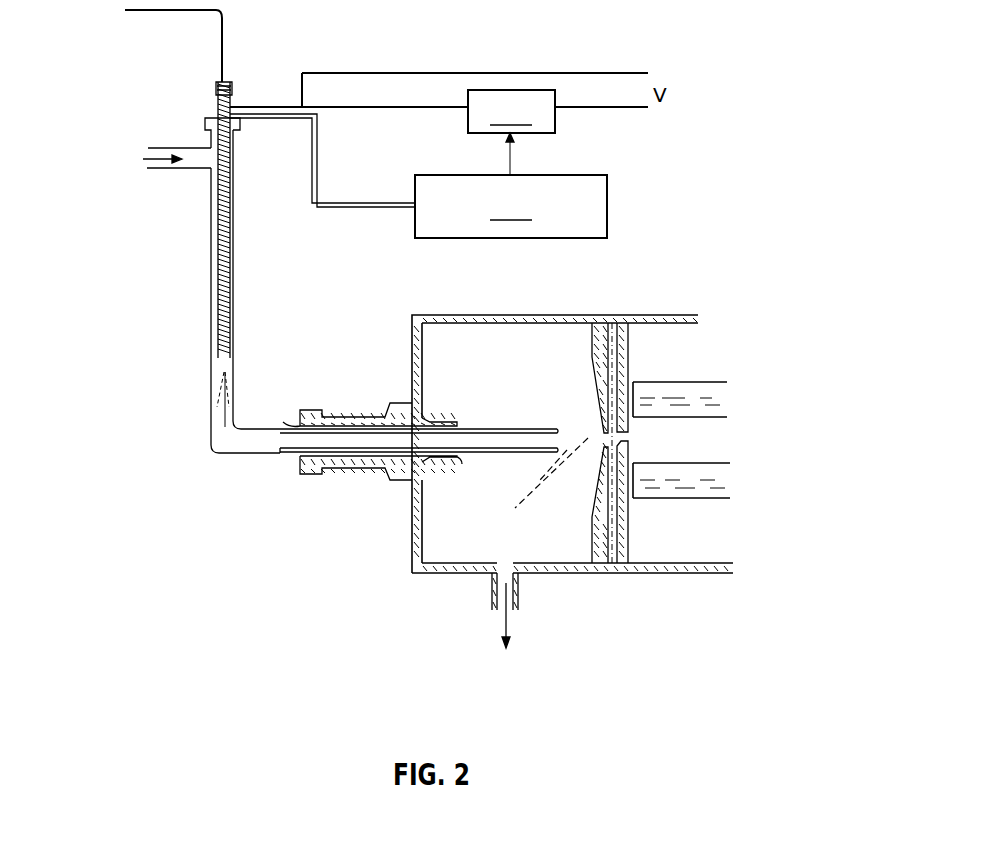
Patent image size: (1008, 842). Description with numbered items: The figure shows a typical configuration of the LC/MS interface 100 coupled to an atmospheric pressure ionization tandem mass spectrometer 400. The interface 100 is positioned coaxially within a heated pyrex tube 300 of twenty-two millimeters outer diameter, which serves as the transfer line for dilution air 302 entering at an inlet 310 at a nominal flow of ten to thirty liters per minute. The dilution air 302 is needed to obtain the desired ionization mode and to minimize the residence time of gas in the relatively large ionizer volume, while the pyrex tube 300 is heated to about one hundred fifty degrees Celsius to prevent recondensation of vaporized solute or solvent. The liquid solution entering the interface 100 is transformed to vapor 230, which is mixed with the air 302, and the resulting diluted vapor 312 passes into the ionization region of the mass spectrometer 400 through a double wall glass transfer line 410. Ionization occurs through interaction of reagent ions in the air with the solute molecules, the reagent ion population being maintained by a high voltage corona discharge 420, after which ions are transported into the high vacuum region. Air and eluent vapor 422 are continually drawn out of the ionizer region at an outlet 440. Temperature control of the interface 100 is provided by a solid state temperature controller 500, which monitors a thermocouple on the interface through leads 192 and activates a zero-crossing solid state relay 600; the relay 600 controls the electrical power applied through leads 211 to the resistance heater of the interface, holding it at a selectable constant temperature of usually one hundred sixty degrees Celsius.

The interface 100 is at (233, 82).
The leads 211 is at (370, 107).
The leads 192 is at (317, 157).
The zero-crossing solid state relay 600 is at (511, 111).
The solid state temperature controller 500 is at (511, 185).
The inlet 310 is at (180, 148).
The dilution air 302 is at (143, 159).
The pyrex tube 300 is at (210, 278).
The vapor 230 is at (227, 362).
The diluted vapor 312 is at (227, 410).
The tandem mass spectrometer 400 is at (405, 355).
The double wall glass transfer line 410 is at (503, 427).
The high voltage corona discharge 420 is at (540, 492).
The outlet 440 is at (492, 585).
The air and eluent vapor 422 is at (497, 638).